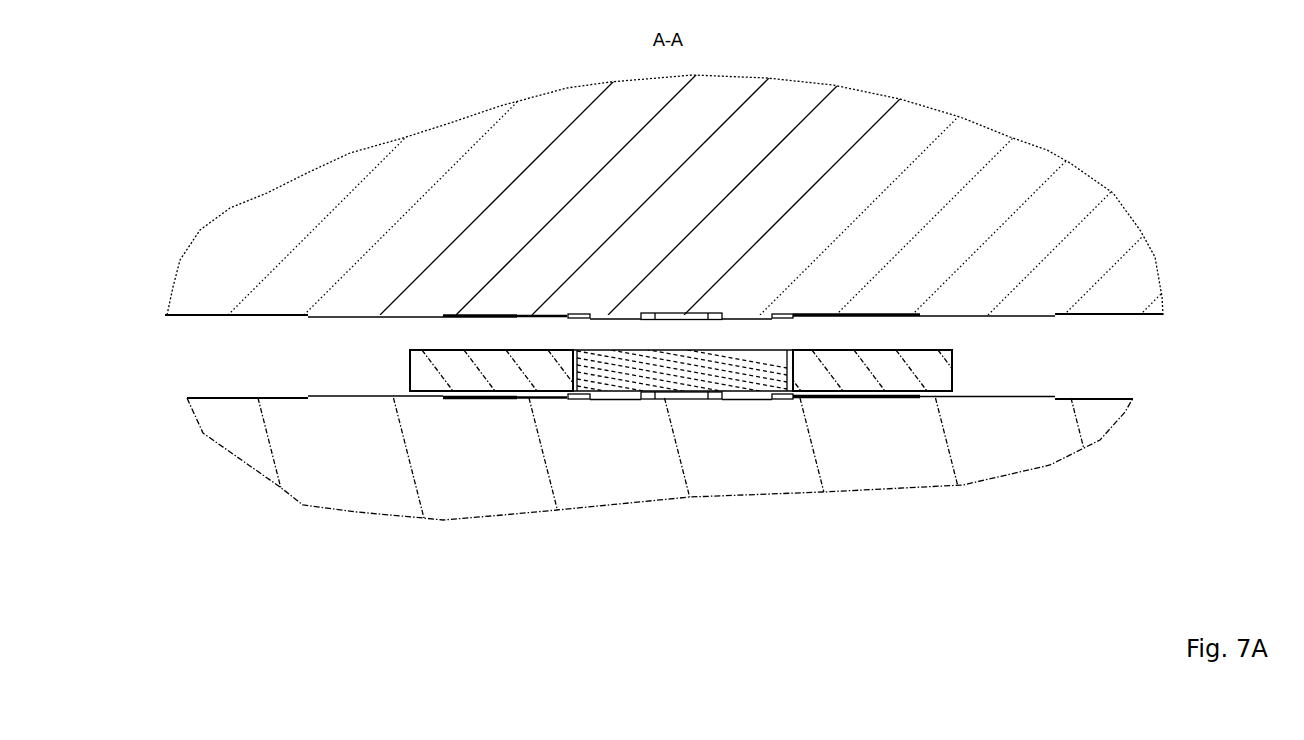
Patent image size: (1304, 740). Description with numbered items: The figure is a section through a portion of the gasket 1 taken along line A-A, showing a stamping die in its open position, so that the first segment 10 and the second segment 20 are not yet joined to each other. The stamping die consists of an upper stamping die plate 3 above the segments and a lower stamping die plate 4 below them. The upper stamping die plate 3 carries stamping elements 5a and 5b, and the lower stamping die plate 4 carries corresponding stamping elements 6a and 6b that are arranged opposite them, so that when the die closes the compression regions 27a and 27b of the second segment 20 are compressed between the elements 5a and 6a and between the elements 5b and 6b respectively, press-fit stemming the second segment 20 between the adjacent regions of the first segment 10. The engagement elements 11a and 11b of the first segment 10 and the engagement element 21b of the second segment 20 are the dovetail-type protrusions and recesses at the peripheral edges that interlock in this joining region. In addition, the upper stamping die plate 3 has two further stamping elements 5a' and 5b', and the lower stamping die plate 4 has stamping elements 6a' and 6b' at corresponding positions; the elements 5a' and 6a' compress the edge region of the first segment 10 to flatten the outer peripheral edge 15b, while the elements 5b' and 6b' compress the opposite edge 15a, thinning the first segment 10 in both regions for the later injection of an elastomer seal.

The gasket 1 is at (975, 346).
The upper stamping die plate 3 is at (898, 128).
The lower stamping die plate 4 is at (877, 473).
The stamping element 5a is at (681, 282).
The stamping element 5a' is at (375, 281).
The stamping element 5b is at (760, 284).
The stamping element 5b' is at (994, 294).
The stamping element 6a is at (681, 431).
The stamping element 6a' is at (375, 437).
The stamping element 6b is at (768, 429).
The stamping element 6b' is at (991, 431).
The first segment 10 is at (428, 363).
The engagement element 11a is at (440, 380).
The engagement element 11b is at (933, 378).
The edge section 15a is at (952, 380).
The edge section 15b is at (407, 377).
The second segment 20 is at (724, 372).
The engagement element 21b is at (637, 378).
The compression region 27a is at (620, 357).
The compression region 27b is at (742, 367).